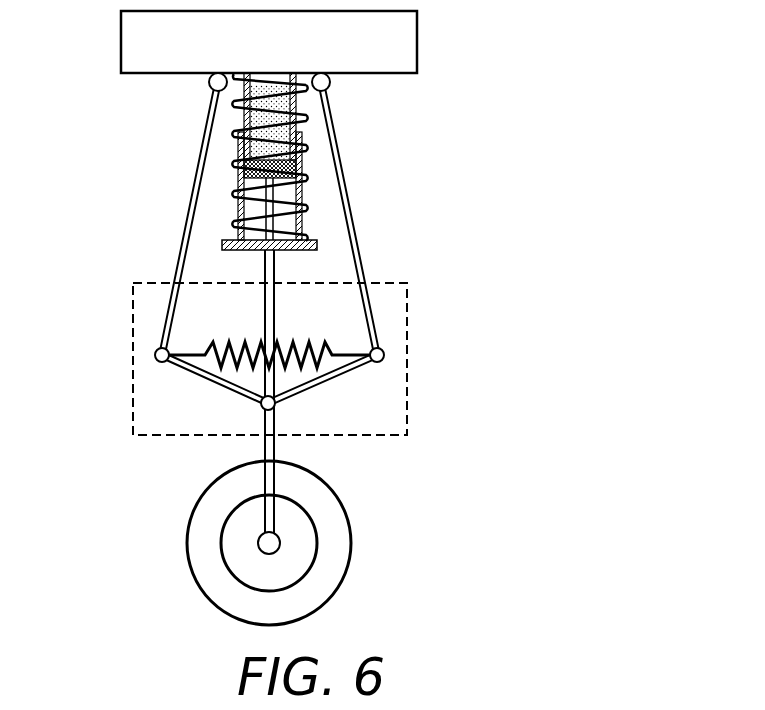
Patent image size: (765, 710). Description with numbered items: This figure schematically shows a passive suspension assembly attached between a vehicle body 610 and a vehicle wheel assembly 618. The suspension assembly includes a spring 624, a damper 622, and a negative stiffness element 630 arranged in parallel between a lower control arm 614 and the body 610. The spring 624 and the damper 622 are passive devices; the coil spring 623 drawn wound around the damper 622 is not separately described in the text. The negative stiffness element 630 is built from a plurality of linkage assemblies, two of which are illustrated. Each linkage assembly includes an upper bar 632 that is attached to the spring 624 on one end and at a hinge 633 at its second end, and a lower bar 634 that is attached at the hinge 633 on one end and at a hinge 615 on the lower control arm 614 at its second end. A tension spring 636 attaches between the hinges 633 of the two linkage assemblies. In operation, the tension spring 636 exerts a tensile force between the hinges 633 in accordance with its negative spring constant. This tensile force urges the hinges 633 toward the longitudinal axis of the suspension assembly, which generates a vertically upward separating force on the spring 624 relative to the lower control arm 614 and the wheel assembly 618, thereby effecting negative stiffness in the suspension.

The vehicle body 610 is at (183, 57).
The damper 622 is at (295, 190).
The coil spring 623 is at (250, 97).
The spring 624 is at (308, 208).
The negative stiffness element 630 is at (407, 380).
The upper bar 632 is at (180, 250).
The hinge 633 is at (157, 358).
The lower bar 634 is at (185, 372).
The tension spring 636 is at (332, 348).
The hinge 615 is at (262, 408).
The lower control arm 614 is at (280, 447).
The vehicle wheel assembly 618 is at (353, 540).